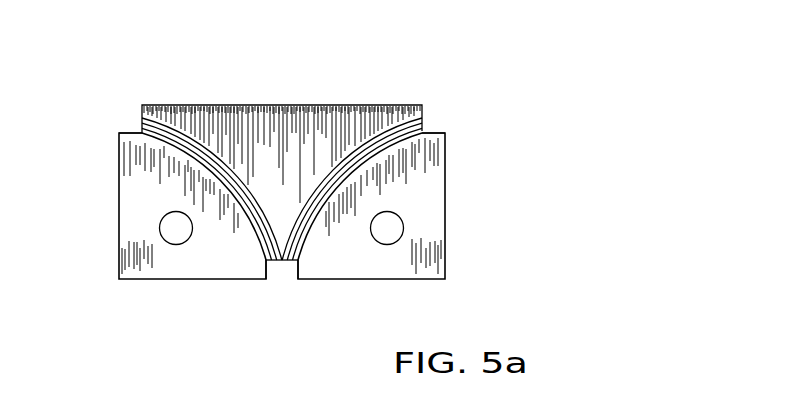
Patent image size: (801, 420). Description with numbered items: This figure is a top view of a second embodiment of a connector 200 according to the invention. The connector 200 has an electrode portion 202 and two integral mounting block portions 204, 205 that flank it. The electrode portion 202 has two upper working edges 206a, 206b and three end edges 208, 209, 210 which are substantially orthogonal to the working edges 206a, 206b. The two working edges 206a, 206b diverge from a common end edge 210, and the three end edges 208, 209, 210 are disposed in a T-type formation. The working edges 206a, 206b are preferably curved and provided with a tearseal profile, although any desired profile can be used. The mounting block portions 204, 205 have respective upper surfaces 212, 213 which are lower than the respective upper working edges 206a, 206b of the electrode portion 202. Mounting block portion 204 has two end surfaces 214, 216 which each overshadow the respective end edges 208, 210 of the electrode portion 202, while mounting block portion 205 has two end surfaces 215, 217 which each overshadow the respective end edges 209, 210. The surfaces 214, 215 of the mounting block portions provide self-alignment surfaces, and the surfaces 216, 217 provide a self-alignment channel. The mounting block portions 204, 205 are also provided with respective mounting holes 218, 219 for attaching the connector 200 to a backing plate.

The connector 200 is at (100, 202).
The electrode portion 202 is at (282, 101).
The mounting block portion 204 is at (152, 219).
The mounting block portion 205 is at (406, 217).
The upper working edge 206a is at (183, 131).
The upper working edge 206b is at (381, 128).
The end edge 208 is at (138, 129).
The end edge 209 is at (423, 112).
The common end edge 210 is at (288, 266).
The upper surface 212 is at (247, 270).
The upper surface 213 is at (367, 270).
The end surface 214 is at (127, 131).
The end surface 215 is at (441, 133).
The end surface 216 is at (265, 262).
The end surface 217 is at (282, 262).
The mounting hole 218 is at (178, 233).
The mounting hole 219 is at (390, 232).